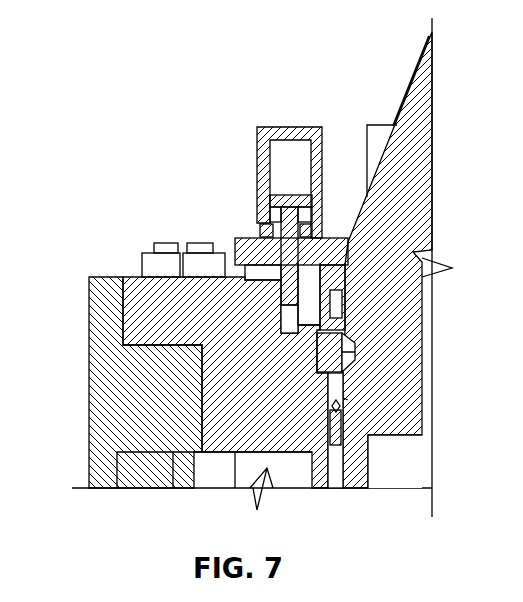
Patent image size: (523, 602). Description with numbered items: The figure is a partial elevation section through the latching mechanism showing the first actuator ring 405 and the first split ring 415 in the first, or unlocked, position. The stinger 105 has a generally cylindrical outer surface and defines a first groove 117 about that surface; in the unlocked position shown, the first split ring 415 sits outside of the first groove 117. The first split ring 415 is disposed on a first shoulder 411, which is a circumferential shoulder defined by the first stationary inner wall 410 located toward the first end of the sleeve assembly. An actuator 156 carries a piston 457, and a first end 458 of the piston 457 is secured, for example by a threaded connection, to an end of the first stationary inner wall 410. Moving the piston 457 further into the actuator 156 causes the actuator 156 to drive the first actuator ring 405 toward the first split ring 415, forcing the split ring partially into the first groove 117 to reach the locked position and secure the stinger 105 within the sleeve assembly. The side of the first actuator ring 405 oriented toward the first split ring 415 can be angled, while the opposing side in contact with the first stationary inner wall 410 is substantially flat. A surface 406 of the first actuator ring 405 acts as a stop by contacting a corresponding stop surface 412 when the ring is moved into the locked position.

The stinger 105 is at (405, 188).
The first groove 117 is at (347, 345).
The actuator 156 is at (283, 127).
The first actuator ring 405 is at (236, 240).
The surface 406 is at (250, 285).
The first stationary inner wall 410 is at (318, 347).
The first shoulder 411 is at (335, 375).
The stop surface 412 is at (348, 242).
The first split ring 415 is at (330, 358).
The piston 457 is at (290, 195).
The first end of the piston 458 is at (283, 315).